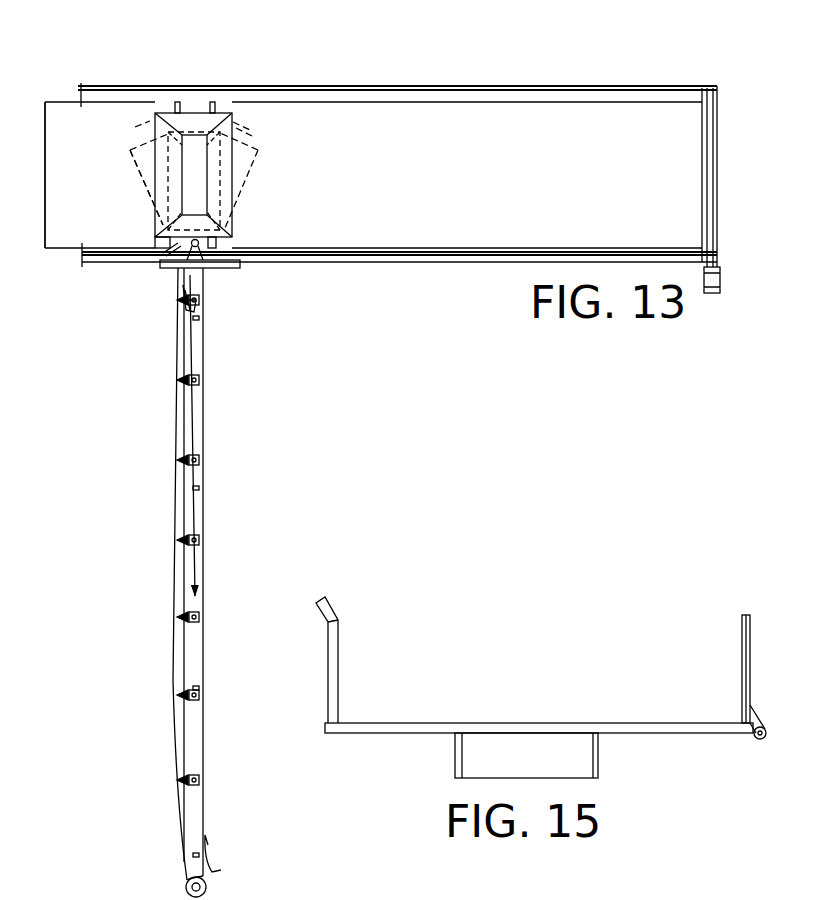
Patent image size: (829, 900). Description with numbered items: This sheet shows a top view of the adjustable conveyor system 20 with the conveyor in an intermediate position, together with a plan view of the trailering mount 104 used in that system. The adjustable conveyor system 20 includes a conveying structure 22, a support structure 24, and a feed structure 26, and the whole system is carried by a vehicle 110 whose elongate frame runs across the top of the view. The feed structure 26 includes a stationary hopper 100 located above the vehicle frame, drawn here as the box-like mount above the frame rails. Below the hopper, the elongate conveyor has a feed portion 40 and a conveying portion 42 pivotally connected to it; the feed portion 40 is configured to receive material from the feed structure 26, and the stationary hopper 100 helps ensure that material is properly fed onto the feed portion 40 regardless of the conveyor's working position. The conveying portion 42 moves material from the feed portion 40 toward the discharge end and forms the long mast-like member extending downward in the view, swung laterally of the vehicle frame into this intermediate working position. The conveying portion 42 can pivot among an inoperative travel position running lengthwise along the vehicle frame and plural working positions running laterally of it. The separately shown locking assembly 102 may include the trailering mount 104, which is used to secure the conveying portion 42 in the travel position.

In FIG. 13, the vehicle 110 is at (530, 66).
In FIG. 13, the stationary hopper 100 is at (197, 122).
In FIG. 13, the feed structure 26 is at (256, 192).
In FIG. 13, the support structure 24 is at (216, 260).
In FIG. 13, the feed portion 40 is at (144, 213).
In FIG. 13, the adjustable conveyor system 20 is at (122, 177).
In FIG. 13, the conveying structure 22 is at (116, 445).
In FIG. 13, the conveying portion 42 is at (165, 516).
In FIG. 15, the locking assembly 102 is at (653, 628).
In FIG. 15, the trailering mount 104 is at (649, 733).